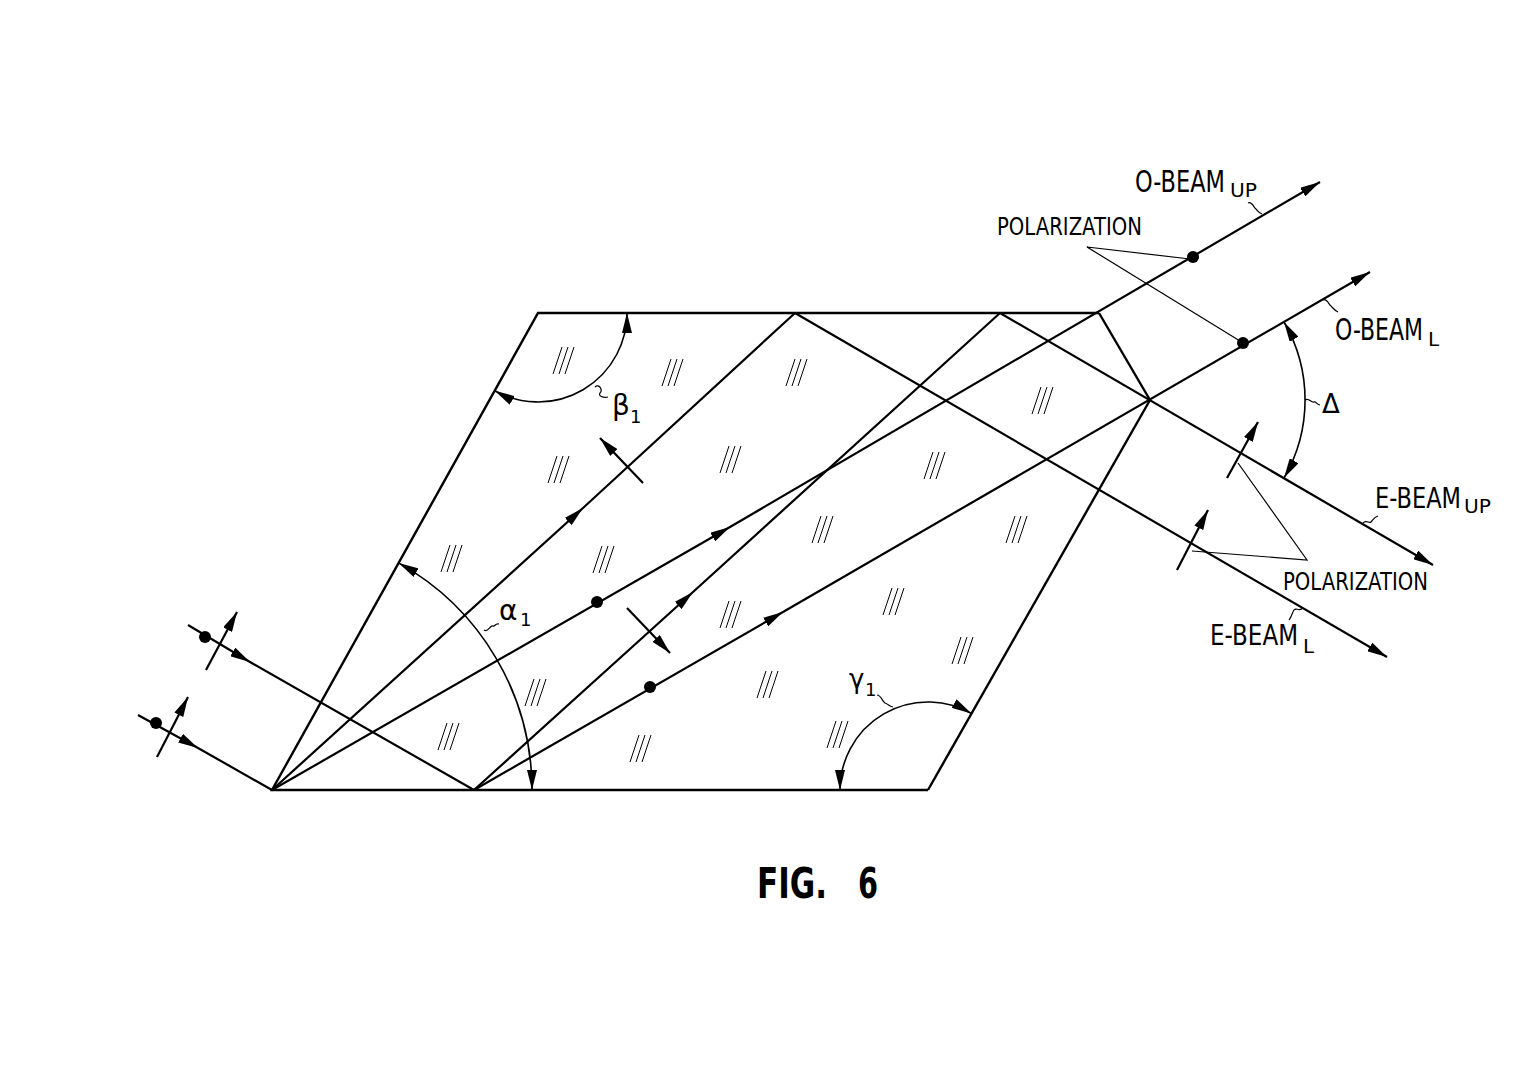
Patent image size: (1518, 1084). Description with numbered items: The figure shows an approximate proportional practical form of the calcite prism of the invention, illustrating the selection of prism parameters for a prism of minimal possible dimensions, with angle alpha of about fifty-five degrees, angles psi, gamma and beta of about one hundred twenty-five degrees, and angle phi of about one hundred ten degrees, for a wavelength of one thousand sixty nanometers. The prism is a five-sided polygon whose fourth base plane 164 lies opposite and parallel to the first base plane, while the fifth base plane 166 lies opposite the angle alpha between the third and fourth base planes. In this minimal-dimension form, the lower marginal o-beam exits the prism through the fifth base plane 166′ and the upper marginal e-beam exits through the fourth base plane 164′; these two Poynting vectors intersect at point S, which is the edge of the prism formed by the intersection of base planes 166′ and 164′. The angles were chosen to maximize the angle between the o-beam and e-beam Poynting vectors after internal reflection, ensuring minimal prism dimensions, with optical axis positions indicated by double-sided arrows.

The fourth base plane 164 is at (1039, 595).
The fifth base plane 166 is at (1141, 356).
The fourth base plane 164′ is at (1038, 597).
The fifth base plane 166′ is at (1122, 353).